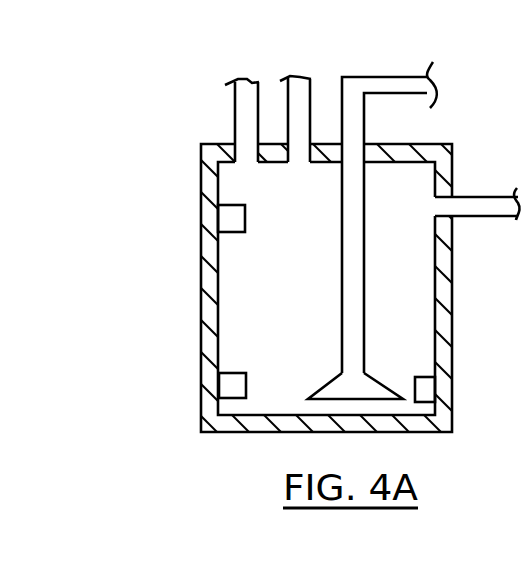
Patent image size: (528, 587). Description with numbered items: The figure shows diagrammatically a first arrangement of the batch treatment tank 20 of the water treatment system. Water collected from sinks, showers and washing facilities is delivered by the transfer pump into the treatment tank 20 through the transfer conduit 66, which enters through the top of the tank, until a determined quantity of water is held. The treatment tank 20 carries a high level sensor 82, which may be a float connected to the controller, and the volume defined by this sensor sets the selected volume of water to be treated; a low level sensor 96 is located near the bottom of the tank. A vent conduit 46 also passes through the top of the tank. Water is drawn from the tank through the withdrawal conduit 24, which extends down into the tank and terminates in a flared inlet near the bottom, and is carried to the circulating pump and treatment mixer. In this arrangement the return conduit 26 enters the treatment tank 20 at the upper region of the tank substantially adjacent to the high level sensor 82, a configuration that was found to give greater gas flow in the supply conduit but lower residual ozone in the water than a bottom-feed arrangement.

The treatment tank 20 is at (454, 352).
The withdrawal conduit 24 is at (389, 82).
The return conduit 26 is at (487, 207).
The vent conduit 46 is at (307, 105).
The transfer conduit 66 is at (237, 107).
The high level sensor 82 is at (220, 221).
The low level sensor 96 is at (220, 388).